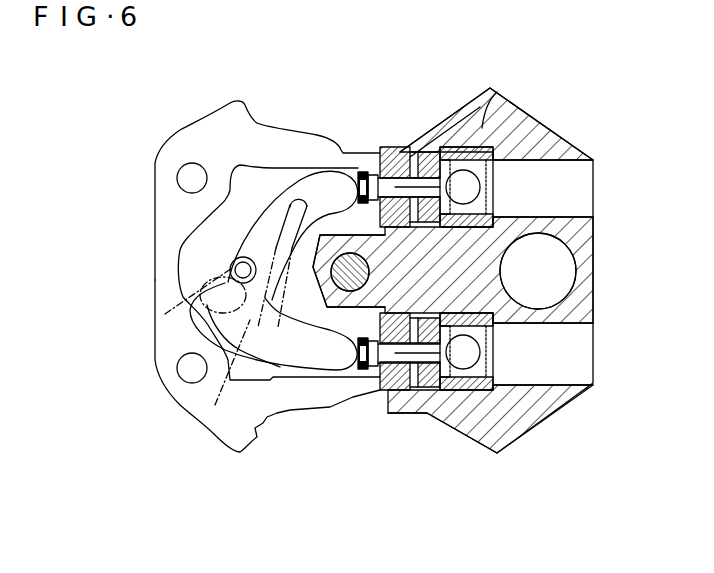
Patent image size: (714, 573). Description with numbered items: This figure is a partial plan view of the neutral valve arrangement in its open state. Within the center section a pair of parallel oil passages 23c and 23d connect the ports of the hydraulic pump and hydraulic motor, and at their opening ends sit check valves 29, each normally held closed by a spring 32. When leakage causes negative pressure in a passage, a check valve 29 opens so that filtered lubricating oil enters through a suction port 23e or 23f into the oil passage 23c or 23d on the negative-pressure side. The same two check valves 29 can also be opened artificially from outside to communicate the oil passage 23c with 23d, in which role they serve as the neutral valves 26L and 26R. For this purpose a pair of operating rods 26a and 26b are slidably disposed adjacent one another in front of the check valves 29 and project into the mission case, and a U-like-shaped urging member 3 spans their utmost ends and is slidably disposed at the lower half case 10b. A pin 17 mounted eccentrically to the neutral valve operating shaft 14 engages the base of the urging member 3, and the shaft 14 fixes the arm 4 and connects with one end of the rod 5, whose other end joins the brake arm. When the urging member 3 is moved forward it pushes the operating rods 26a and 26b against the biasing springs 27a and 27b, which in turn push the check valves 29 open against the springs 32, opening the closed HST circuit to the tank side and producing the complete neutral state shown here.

The urging member 3 is at (290, 366).
The arm 4 is at (215, 405).
The rod 5 is at (313, 226).
The lower half case 10b is at (163, 141).
The neutral valve operating shaft 14 is at (185, 302).
The pin 17 is at (233, 252).
The oil passage 23c is at (557, 370).
The oil passage 23d is at (580, 173).
The suction port 23e is at (422, 405).
The suction port 23f is at (413, 150).
The neutral valve 26R is at (470, 138).
The neutral valve 26L is at (478, 408).
The operating rod 26a is at (380, 400).
The operating rod 26b is at (418, 220).
The biasing spring 27a is at (380, 385).
The biasing spring 27b is at (360, 170).
The check valve 29 is at (480, 230).
The spring 32 is at (490, 123).